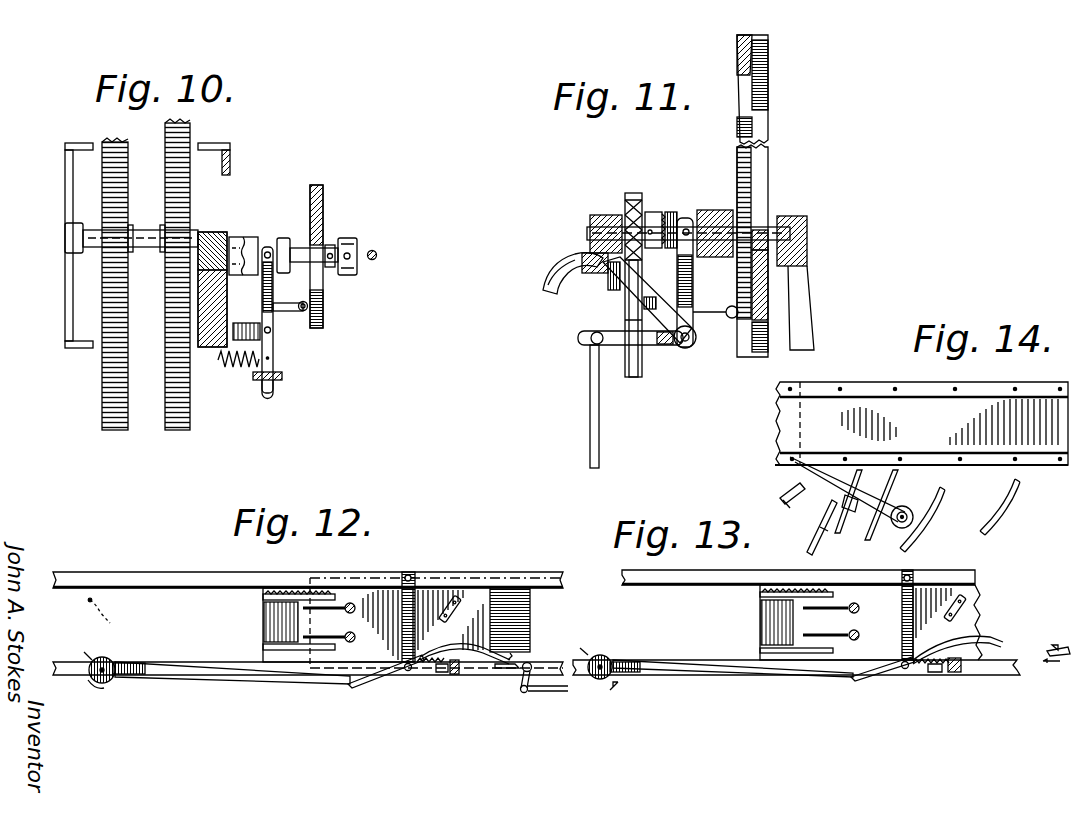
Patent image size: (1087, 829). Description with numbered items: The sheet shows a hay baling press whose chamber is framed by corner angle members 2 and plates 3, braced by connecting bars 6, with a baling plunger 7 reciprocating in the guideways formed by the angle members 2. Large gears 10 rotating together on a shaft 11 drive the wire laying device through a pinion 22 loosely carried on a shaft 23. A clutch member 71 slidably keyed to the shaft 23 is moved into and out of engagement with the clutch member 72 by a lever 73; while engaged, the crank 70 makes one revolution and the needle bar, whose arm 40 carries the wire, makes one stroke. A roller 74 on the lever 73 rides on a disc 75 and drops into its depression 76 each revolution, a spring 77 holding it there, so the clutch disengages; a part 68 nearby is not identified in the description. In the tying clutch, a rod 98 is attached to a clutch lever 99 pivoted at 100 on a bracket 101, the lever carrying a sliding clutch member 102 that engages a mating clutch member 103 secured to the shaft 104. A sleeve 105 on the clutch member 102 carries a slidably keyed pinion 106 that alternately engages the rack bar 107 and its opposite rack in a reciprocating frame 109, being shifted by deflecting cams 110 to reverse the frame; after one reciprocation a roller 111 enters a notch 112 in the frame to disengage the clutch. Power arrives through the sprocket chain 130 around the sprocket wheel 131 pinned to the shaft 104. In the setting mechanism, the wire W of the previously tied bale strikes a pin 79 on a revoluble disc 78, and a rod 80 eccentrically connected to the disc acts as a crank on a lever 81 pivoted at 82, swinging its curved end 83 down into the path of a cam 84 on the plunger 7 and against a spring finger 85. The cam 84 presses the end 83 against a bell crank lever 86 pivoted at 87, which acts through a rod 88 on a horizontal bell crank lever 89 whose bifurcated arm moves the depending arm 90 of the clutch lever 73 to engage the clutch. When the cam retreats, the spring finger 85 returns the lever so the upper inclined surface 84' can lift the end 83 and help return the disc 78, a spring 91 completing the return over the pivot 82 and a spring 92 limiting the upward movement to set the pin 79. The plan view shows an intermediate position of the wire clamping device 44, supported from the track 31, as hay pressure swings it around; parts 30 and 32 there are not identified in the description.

In FIG. 10, the corner angle members 2 is at (72, 144).
In FIG. 14, the corner angle members 2 is at (776, 466).
In FIG. 12, the corner angle members 2 is at (180, 570).
In FIG. 13, the corner angle members 2 is at (652, 580).
In FIG. 14, the plates 3 is at (777, 436).
In FIG. 12, the plates 3 is at (370, 597).
In FIG. 13, the plates 3 is at (845, 650).
In FIG. 12, the connecting bars 6 is at (405, 620).
In FIG. 13, the connecting bars 6 is at (905, 610).
In FIG. 12, the baling plunger 7 is at (500, 607).
In FIG. 10, the large gears 10 is at (150, 434).
In FIG. 10, the shaft 11 is at (75, 240).
In FIG. 10, the pinion 22 is at (192, 207).
In FIG. 10, the shaft 23 is at (292, 250).
In FIG. 14, the pin 30 is at (776, 499).
In FIG. 14, the track 31 is at (916, 549).
In FIG. 14, the curved strip 32 is at (1008, 516).
In FIG. 14, the arm 40 is at (826, 550).
In FIG. 14, the wire clamping device 44 is at (920, 503).
In FIG. 10, the screw 68 is at (378, 255).
In FIG. 10, the crank 70 is at (354, 244).
In FIG. 10, the clutch member 71 is at (251, 240).
In FIG. 10, the clutch member 72 is at (233, 233).
In FIG. 10, the lever 73 is at (274, 288).
In FIG. 10, the roller 74 is at (306, 310).
In FIG. 10, the disc 75 is at (304, 254).
In FIG. 10, the depression 76 is at (322, 188).
In FIG. 10, the spring 77 is at (237, 369).
In FIG. 12, the revoluble disc 78 is at (116, 664).
In FIG. 13, the revoluble disc 78 is at (616, 664).
In FIG. 12, the pin 79 is at (92, 660).
In FIG. 13, the pin 79 is at (608, 658).
In FIG. 12, the rod 80 is at (216, 679).
In FIG. 13, the rod 80 is at (705, 676).
In FIG. 12, the lever 81 is at (456, 650).
In FIG. 13, the lever 81 is at (968, 640).
In FIG. 12, the pivot 82 is at (408, 672).
In FIG. 13, the pivot 82 is at (906, 670).
In FIG. 12, the curved end 83 is at (492, 656).
In FIG. 13, the curved end 83 is at (982, 656).
In FIG. 12, the cam 84 is at (474, 688).
In FIG. 13, the cam 84 is at (1050, 677).
In FIG. 12, the upper inclined surface 84' is at (535, 642).
In FIG. 13, the upper inclined surface 84' is at (1045, 628).
In FIG. 12, the spring finger 85 is at (444, 676).
In FIG. 13, the spring finger 85 is at (938, 676).
In FIG. 12, the bell crank lever 86 is at (524, 694).
In FIG. 12, the pivot 87 is at (530, 664).
In FIG. 12, the rod 88 is at (572, 690).
In FIG. 10, the bell crank lever 89 is at (284, 376).
In FIG. 10, the depending arm 90 is at (267, 396).
In FIG. 12, the spring 91 is at (372, 683).
In FIG. 13, the spring 91 is at (875, 680).
In FIG. 12, the spring 92 is at (456, 596).
In FIG. 13, the spring 92 is at (963, 604).
In FIG. 11, the link or rod 98 is at (591, 420).
In FIG. 11, the clutch lever 99 is at (590, 344).
In FIG. 11, the pivotal support 100 is at (685, 348).
In FIG. 11, the extending bracket 101 is at (612, 268).
In FIG. 11, the clutch member 102 is at (653, 210).
In FIG. 11, the mating clutch member 103 is at (633, 195).
In FIG. 11, the shaft 104 is at (600, 226).
In FIG. 11, the sleeve 105 is at (672, 210).
In FIG. 11, the pinion 106 is at (735, 220).
In FIG. 11, the rack bar 107 is at (752, 166).
In FIG. 11, the frame 109 is at (768, 80).
In FIG. 11, the deflecting cams 110 is at (737, 52).
In FIG. 11, the ball or roller 111 is at (730, 318).
In FIG. 11, the notch 112 is at (810, 300).
In FIG. 11, the sprocket chain 130 is at (622, 294).
In FIG. 11, the sprocket wheel 131 is at (640, 243).
In FIG. 12, the wire W is at (95, 655).